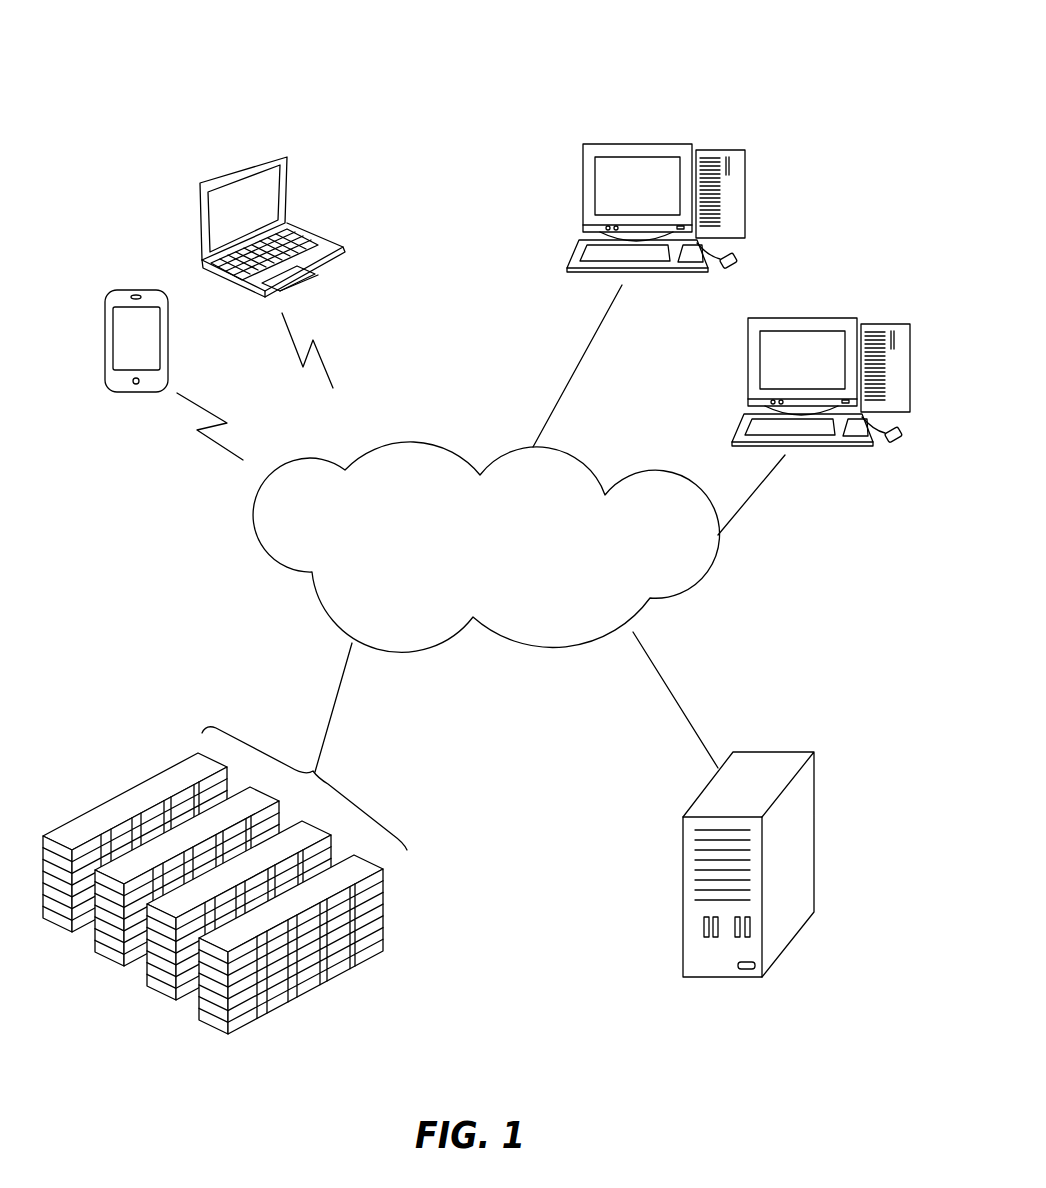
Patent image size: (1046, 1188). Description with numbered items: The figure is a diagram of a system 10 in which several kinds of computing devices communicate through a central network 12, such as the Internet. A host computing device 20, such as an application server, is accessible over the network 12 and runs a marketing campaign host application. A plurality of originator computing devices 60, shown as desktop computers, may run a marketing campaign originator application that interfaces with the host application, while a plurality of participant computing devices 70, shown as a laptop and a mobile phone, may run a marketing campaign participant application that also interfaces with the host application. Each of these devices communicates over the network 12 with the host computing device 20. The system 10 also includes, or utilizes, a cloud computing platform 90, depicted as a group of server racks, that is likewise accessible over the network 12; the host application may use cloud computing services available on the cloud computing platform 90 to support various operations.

The system 10 is at (410, 92).
The network 12 is at (418, 444).
The host computing device 20 is at (776, 752).
The originator computing devices 60 is at (745, 192).
The participant computing devices 70 is at (272, 156).
The cloud computing platform 90 is at (123, 748).